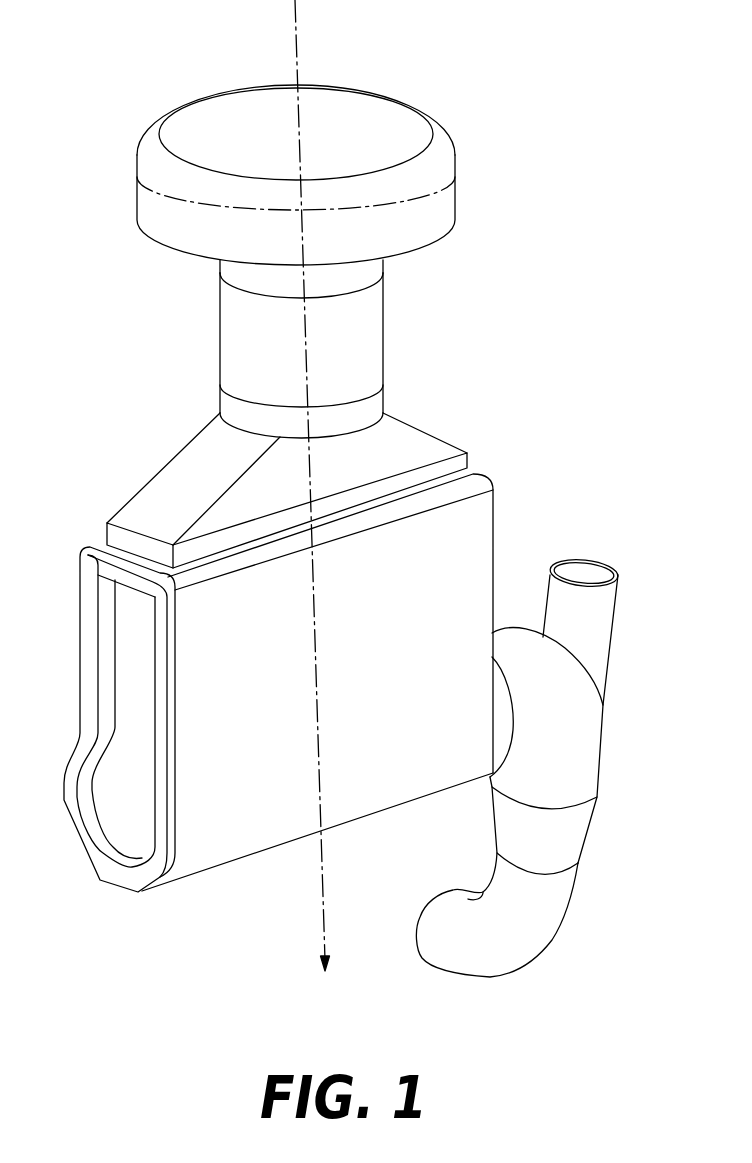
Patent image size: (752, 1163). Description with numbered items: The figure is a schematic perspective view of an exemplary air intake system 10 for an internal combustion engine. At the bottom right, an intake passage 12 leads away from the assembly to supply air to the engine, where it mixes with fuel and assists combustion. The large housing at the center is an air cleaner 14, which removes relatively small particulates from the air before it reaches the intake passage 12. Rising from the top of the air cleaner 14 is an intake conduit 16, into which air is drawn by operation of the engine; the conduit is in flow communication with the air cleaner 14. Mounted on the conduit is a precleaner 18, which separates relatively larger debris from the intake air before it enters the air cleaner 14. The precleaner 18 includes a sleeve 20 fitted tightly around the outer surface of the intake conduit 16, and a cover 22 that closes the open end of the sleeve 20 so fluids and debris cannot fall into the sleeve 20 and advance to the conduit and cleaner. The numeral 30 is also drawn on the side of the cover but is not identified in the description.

The air intake system 10 is at (576, 104).
The intake passage 12 is at (587, 758).
The air cleaner 14 is at (470, 530).
The intake conduit 16 is at (368, 358).
The precleaner 18 is at (378, 112).
The sleeve 20 is at (367, 272).
The cover 22 is at (227, 100).
The cap side wall 30 is at (440, 208).